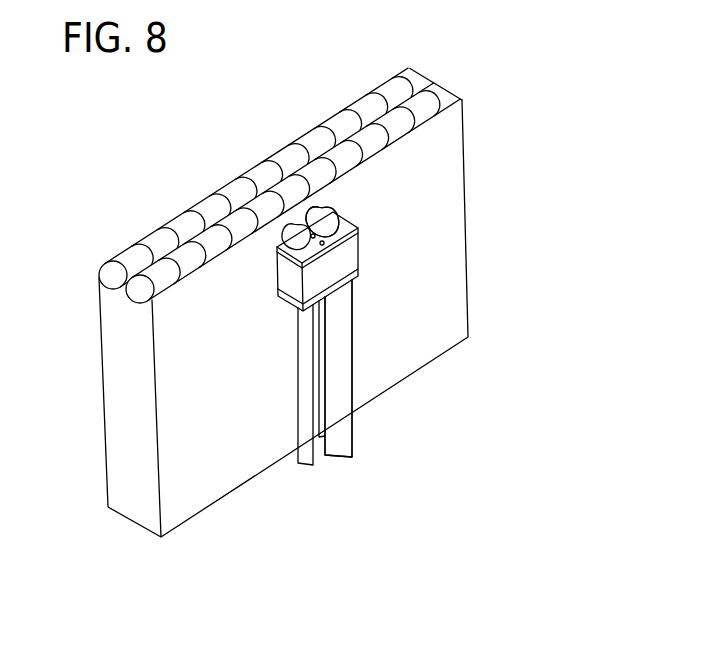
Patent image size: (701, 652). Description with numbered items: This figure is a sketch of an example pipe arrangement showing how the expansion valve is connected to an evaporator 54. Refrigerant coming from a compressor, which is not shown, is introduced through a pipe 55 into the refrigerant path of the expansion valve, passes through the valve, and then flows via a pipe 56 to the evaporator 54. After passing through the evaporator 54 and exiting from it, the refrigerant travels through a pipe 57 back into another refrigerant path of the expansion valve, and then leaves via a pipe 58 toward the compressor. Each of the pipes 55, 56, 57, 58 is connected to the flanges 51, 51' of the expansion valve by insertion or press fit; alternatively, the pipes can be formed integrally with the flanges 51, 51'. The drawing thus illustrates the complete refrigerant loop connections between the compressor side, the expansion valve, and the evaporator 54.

The evaporator 54 is at (470, 287).
The flange 51' is at (413, 213).
The pipe 57 is at (325, 206).
The pipe 56 is at (281, 230).
The pipe 55 is at (299, 393).
The pipe 58 is at (345, 380).
The flange 51 is at (391, 368).